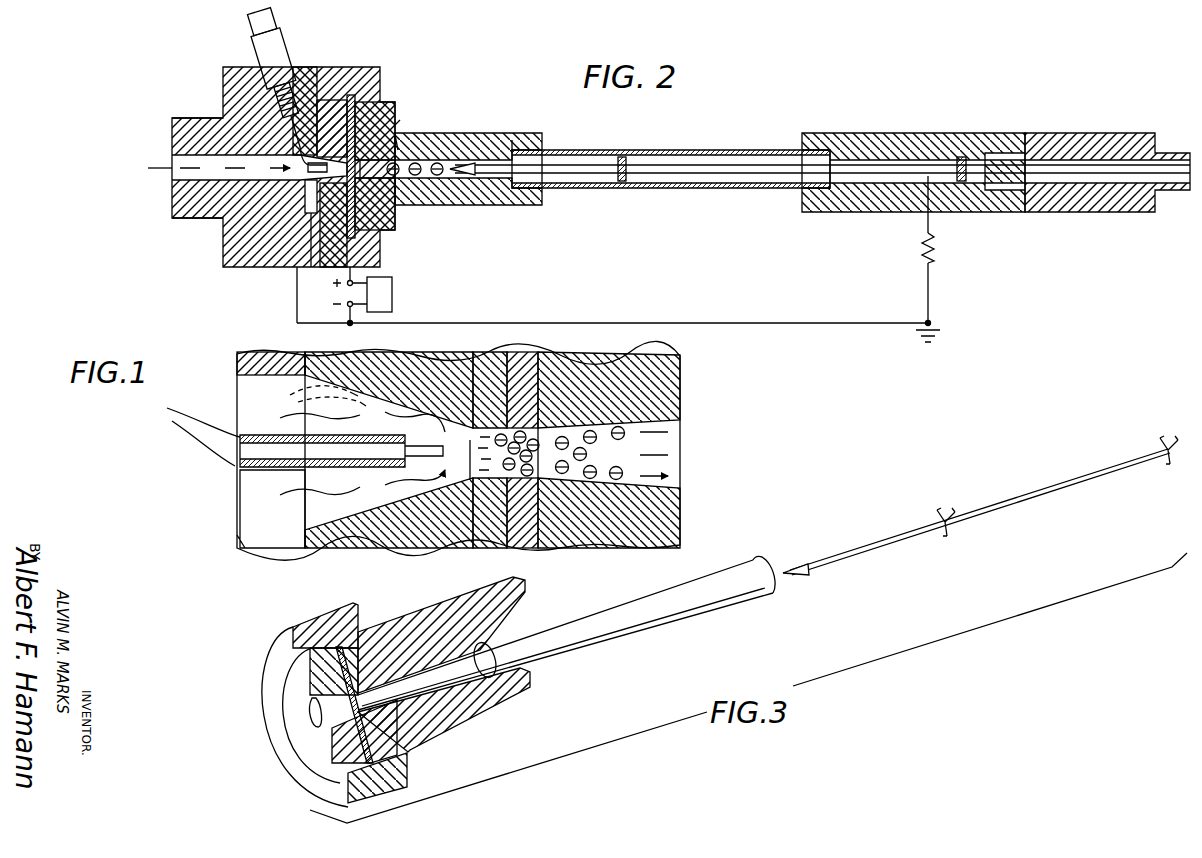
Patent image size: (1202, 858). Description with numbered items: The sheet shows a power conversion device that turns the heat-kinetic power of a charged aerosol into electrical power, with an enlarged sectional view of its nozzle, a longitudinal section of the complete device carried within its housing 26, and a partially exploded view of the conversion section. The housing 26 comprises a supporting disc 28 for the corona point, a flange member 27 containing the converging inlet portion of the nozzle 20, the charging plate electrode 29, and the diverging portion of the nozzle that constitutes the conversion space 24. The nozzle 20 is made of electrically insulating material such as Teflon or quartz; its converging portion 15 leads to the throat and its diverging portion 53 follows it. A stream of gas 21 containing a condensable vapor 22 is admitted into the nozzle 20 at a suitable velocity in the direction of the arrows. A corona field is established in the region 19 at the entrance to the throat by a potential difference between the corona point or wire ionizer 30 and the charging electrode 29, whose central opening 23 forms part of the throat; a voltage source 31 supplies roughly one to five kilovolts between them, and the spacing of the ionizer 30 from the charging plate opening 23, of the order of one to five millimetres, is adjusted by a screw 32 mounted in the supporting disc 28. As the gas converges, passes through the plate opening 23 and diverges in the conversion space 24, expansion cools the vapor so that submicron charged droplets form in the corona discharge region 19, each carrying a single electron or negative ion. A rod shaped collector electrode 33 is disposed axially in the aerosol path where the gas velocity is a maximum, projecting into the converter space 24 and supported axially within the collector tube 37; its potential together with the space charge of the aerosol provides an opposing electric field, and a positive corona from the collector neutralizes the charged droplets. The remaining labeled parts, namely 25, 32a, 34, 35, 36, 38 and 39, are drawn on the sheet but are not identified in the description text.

In FIG. 2, the converging portion of the nozzle 15 is at (317, 270).
In FIG. 1, the converging portion of the nozzle 15 is at (380, 400).
In FIG. 2, the corona discharge region 19 is at (356, 110).
In FIG. 1, the corona discharge region 19 is at (500, 465).
In FIG. 2, the nozzle 20 is at (360, 118).
In FIG. 1, the nozzle 20 is at (465, 362).
In FIG. 3, the nozzle 20 is at (312, 657).
In FIG. 2, the stream of gas 21 is at (168, 172).
In FIG. 1, the stream of gas 21 is at (300, 406).
In FIG. 1, the condensable vapor 22 is at (288, 395).
In FIG. 1, the charging plate opening 23 is at (552, 425).
In FIG. 3, the charging plate opening 23 is at (312, 703).
In FIG. 2, the conversion space 24 is at (414, 192).
In FIG. 1, the conversion space 24 is at (675, 420).
In FIG. 3, the conversion space 24 is at (437, 690).
In FIG. 2, the charged particle stream 25 is at (445, 158).
In FIG. 1, the charged particle stream 25 is at (627, 434).
In FIG. 2, the housing 26 is at (222, 84).
In FIG. 2, the flange member 27 is at (340, 100).
In FIG. 3, the flange member 27 is at (355, 612).
In FIG. 2, the supporting disc 28 is at (298, 72).
In FIG. 2, the charging plate electrode 29 is at (368, 128).
In FIG. 1, the charging plate electrode 29 is at (521, 538).
In FIG. 3, the charging plate electrode 29 is at (370, 632).
In FIG. 2, the corona point ionizer 30 is at (376, 244).
In FIG. 1, the corona point ionizer 30 is at (470, 470).
In FIG. 2, the voltage source 31 is at (392, 294).
In FIG. 2, the screw 32 is at (262, 48).
In FIG. 2, the rod tip 32a is at (453, 178).
In FIG. 3, the rod tip 32a is at (792, 572).
In FIG. 2, the collector electrode 33 is at (557, 178).
In FIG. 3, the collector electrode 33 is at (997, 506).
In FIG. 2, the collector electrode 34 is at (398, 135).
In FIG. 3, the collector electrode 34 is at (300, 742).
In FIG. 2, the ground 35 is at (938, 331).
In FIG. 1, the ground 35 is at (485, 432).
In FIG. 2, the resistor 36 is at (934, 246).
In FIG. 2, the collector tube 37 is at (693, 150).
In FIG. 3, the collector tube 37 is at (586, 652).
In FIG. 2, the spacer spider 38 is at (623, 157).
In FIG. 3, the spacer spider 38 is at (943, 510).
In FIG. 2, the tube support 39 is at (512, 140).
In FIG. 2, the diverging portion of the nozzle 53 is at (400, 120).